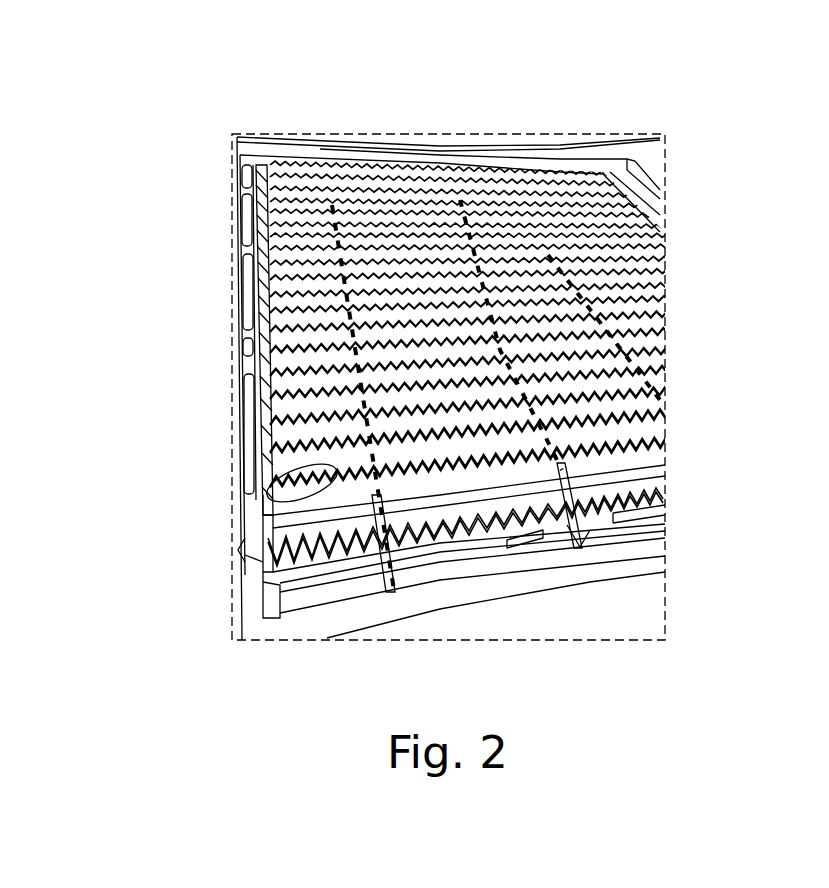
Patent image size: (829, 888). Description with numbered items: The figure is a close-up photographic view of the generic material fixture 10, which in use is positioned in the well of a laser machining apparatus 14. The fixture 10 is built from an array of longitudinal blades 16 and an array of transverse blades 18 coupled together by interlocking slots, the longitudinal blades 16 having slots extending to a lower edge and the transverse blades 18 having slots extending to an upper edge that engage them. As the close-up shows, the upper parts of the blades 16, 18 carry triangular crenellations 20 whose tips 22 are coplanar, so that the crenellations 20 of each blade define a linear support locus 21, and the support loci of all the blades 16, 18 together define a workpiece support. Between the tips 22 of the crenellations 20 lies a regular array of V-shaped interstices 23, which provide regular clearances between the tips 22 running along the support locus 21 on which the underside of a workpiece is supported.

The generic material fixture 10 is at (158, 288).
The laser machining apparatus 14 is at (548, 612).
The longitudinal blades 16 is at (578, 540).
The transverse blades 18 is at (290, 165).
The triangular crenellations 20 is at (282, 388).
The support locus 21 is at (665, 487).
The tip 22 is at (268, 476).
The interstices 23 is at (268, 494).